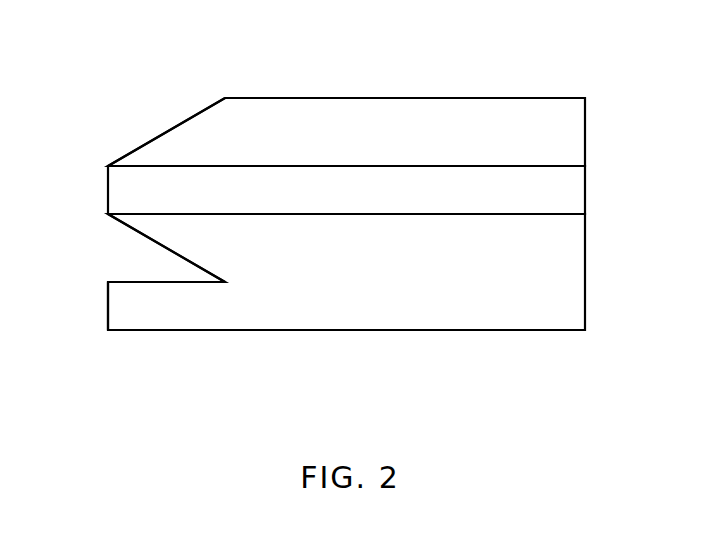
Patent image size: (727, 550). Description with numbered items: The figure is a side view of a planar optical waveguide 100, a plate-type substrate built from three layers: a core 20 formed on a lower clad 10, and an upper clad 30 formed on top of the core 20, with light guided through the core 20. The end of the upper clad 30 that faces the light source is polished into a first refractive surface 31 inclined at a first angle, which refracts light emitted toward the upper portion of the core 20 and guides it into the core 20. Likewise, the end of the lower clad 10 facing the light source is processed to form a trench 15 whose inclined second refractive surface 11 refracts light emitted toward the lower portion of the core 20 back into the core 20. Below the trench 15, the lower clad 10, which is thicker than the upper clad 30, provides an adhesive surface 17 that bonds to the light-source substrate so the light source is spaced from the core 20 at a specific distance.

The planar optical waveguide 100 is at (346, 175).
The lower clad 10 is at (585, 268).
The second refractive surface 11 is at (128, 227).
The trench 15 is at (137, 259).
The adhesive surface 17 is at (108, 306).
The core 20 is at (585, 190).
The upper clad 30 is at (585, 128).
The first refractive surface 31 is at (167, 130).